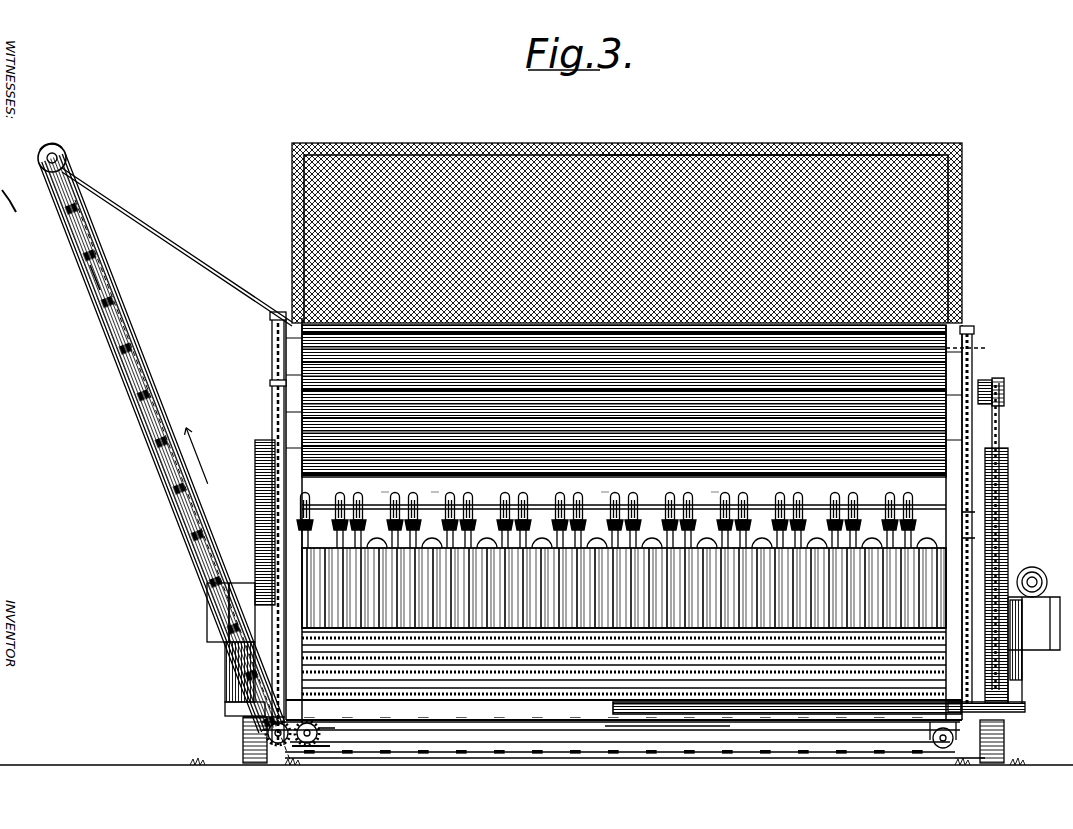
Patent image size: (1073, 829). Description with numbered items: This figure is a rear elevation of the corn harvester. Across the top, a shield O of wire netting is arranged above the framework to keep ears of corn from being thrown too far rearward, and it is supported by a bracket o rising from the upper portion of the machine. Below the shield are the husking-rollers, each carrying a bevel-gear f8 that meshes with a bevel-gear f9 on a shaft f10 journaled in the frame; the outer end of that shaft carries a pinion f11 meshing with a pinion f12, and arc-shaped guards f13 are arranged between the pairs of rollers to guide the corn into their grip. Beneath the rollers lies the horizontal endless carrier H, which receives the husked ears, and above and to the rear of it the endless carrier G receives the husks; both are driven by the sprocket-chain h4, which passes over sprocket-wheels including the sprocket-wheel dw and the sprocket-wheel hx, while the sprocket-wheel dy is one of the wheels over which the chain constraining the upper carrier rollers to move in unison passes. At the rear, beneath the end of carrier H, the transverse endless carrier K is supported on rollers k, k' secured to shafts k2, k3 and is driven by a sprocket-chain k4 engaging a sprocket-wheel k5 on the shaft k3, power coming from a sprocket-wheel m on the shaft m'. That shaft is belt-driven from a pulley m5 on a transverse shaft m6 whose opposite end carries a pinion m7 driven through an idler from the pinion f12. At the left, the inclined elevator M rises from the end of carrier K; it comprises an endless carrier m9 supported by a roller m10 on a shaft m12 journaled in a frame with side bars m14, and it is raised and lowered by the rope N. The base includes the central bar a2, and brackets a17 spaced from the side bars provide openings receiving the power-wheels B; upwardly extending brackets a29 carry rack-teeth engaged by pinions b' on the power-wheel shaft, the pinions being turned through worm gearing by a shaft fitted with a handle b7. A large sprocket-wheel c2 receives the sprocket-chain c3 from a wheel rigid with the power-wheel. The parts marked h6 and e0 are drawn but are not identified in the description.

The shield O is at (378, 170).
The bracket o is at (660, 155).
The rope N is at (180, 246).
The inclined elevator M is at (120, 384).
The roller m10 is at (56, 168).
The shaft m12 is at (66, 160).
The side bars m14 is at (92, 278).
The endless carrier m9 is at (168, 420).
The sprocket-wheel c2 is at (270, 318).
The sprocket-chain c3 is at (270, 383).
The power-wheels B is at (255, 455).
The bracket h6 is at (207, 605).
The pulley m5 is at (252, 630).
The upwardly-extending brackets a29 is at (225, 692).
The brackets a17 is at (225, 714).
The shaft m' is at (236, 740).
The sprocket-wheel m is at (253, 749).
The transverse endless carrier K is at (592, 740).
The sprocket-chain k4 is at (282, 746).
The shaft k3 is at (310, 746).
The sprocket-wheel k5 is at (325, 748).
The roller k' is at (331, 736).
The shaft k2 is at (935, 750).
The roller k is at (967, 770).
The shaft m6 is at (665, 730).
The central bar a2 is at (742, 628).
The endless carrier G is at (624, 663).
The endless carrier H is at (618, 702).
The bevel-gear f8 is at (385, 510).
The bevel-gear f9 is at (435, 510).
The shaft f10 is at (606, 510).
The guards f13 is at (715, 510).
The pinion f11 is at (970, 515).
The pinion f12 is at (968, 540).
The drive chain e0 is at (970, 345).
The sprocket-wheel dy is at (988, 385).
The sprocket-wheel dw is at (1002, 392).
The sprocket-chain h4 is at (1000, 432).
The handle b7 is at (1032, 568).
The pinions b' is at (1040, 570).
The pinion m7 is at (1024, 660).
The sprocket-wheel hx is at (1010, 688).